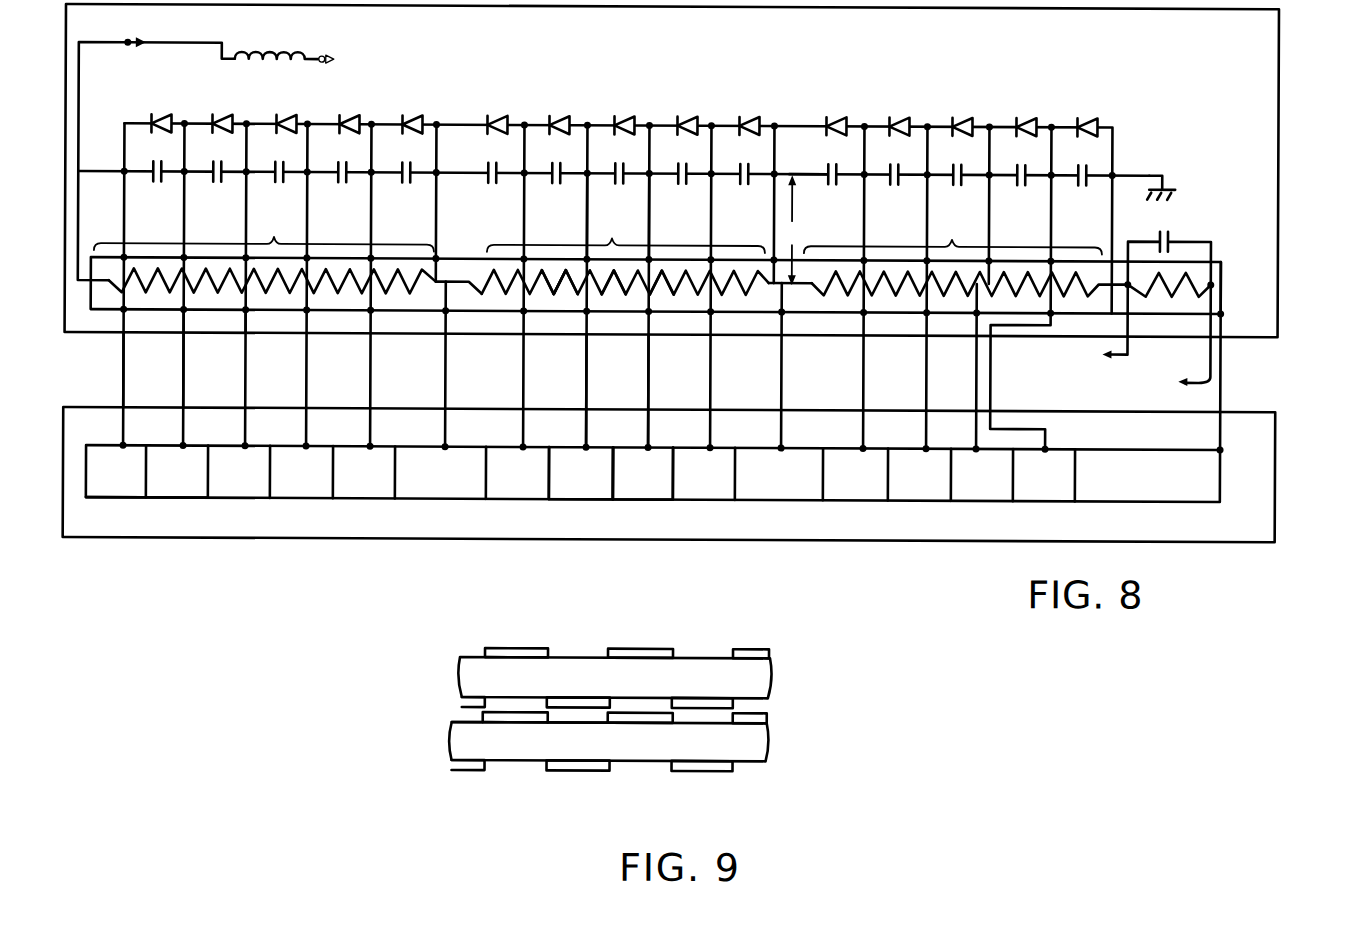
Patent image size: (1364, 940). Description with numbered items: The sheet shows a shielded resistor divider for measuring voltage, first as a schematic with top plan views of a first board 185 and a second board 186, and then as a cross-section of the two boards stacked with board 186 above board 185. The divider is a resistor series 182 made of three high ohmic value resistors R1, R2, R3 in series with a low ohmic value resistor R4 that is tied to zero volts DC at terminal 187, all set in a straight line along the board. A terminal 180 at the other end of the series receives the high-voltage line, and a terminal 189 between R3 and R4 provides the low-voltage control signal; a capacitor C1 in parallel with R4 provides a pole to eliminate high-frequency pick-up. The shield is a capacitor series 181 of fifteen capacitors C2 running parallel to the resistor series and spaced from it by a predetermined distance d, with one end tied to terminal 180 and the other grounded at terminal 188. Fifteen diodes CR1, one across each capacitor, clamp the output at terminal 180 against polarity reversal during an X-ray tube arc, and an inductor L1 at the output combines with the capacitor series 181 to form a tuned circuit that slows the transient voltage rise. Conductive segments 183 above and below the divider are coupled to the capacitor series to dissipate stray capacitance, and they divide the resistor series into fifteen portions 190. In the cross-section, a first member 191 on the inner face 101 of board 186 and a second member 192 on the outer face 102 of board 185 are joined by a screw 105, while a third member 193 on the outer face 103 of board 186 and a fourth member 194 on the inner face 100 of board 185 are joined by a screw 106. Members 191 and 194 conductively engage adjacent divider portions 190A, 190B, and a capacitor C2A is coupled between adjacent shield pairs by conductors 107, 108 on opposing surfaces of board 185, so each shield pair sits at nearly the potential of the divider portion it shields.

In FIG. 8, the terminal 180 is at (128, 46).
In FIG. 8, the diodes CR1 is at (162, 114).
In FIG. 8, the inductor L1 is at (300, 49).
In FIG. 8, the capacitors C2 is at (157, 184).
In FIG. 8, the capacitor C2A is at (627, 161).
In FIG. 8, the capacitor series 181 is at (810, 158).
In FIG. 8, the first board 185 is at (1248, 98).
In FIG. 9, the first board 185 is at (755, 743).
In FIG. 8, the second board 186 is at (1265, 520).
In FIG. 9, the second board 186 is at (757, 685).
In FIG. 8, the terminal 188 is at (1118, 166).
In FIG. 8, the capacitor C1 is at (1172, 224).
In FIG. 8, the resistor R1 is at (265, 251).
In FIG. 8, the resistor R2 is at (625, 253).
In FIG. 8, the resistor R3 is at (966, 256).
In FIG. 8, the resistor R4 is at (1205, 258).
In FIG. 8, the resistor series 182 is at (474, 270).
In FIG. 8, the conductor 107 is at (586, 195).
In FIG. 8, the conductor 108 is at (653, 203).
In FIG. 8, the second member 192 is at (565, 268).
In FIG. 9, the second member 192 is at (590, 770).
In FIG. 8, the fourth member 194 is at (660, 268).
In FIG. 9, the fourth member 194 is at (635, 725).
In FIG. 8, the portions 190 is at (197, 303).
In FIG. 8, the portion 190A is at (565, 295).
In FIG. 9, the portion 190A is at (577, 717).
In FIG. 8, the portion 190B is at (620, 295).
In FIG. 9, the portion 190B is at (664, 705).
In FIG. 8, the conductive segments 183 is at (137, 310).
In FIG. 8, the screw 105 is at (588, 398).
In FIG. 8, the screw 106 is at (650, 398).
In FIG. 8, the terminal 189 is at (1131, 350).
In FIG. 8, the terminal 187 is at (1214, 354).
In FIG. 8, the first member 191 is at (593, 488).
In FIG. 9, the first member 191 is at (577, 702).
In FIG. 8, the third member 193 is at (655, 486).
In FIG. 9, the third member 193 is at (645, 653).
In FIG. 8, the predetermined distance d is at (794, 230).
In FIG. 9, the outer face 103 is at (477, 655).
In FIG. 9, the inner face 101 is at (462, 693).
In FIG. 9, the inner face 100 is at (465, 722).
In FIG. 9, the outer face 102 is at (503, 763).